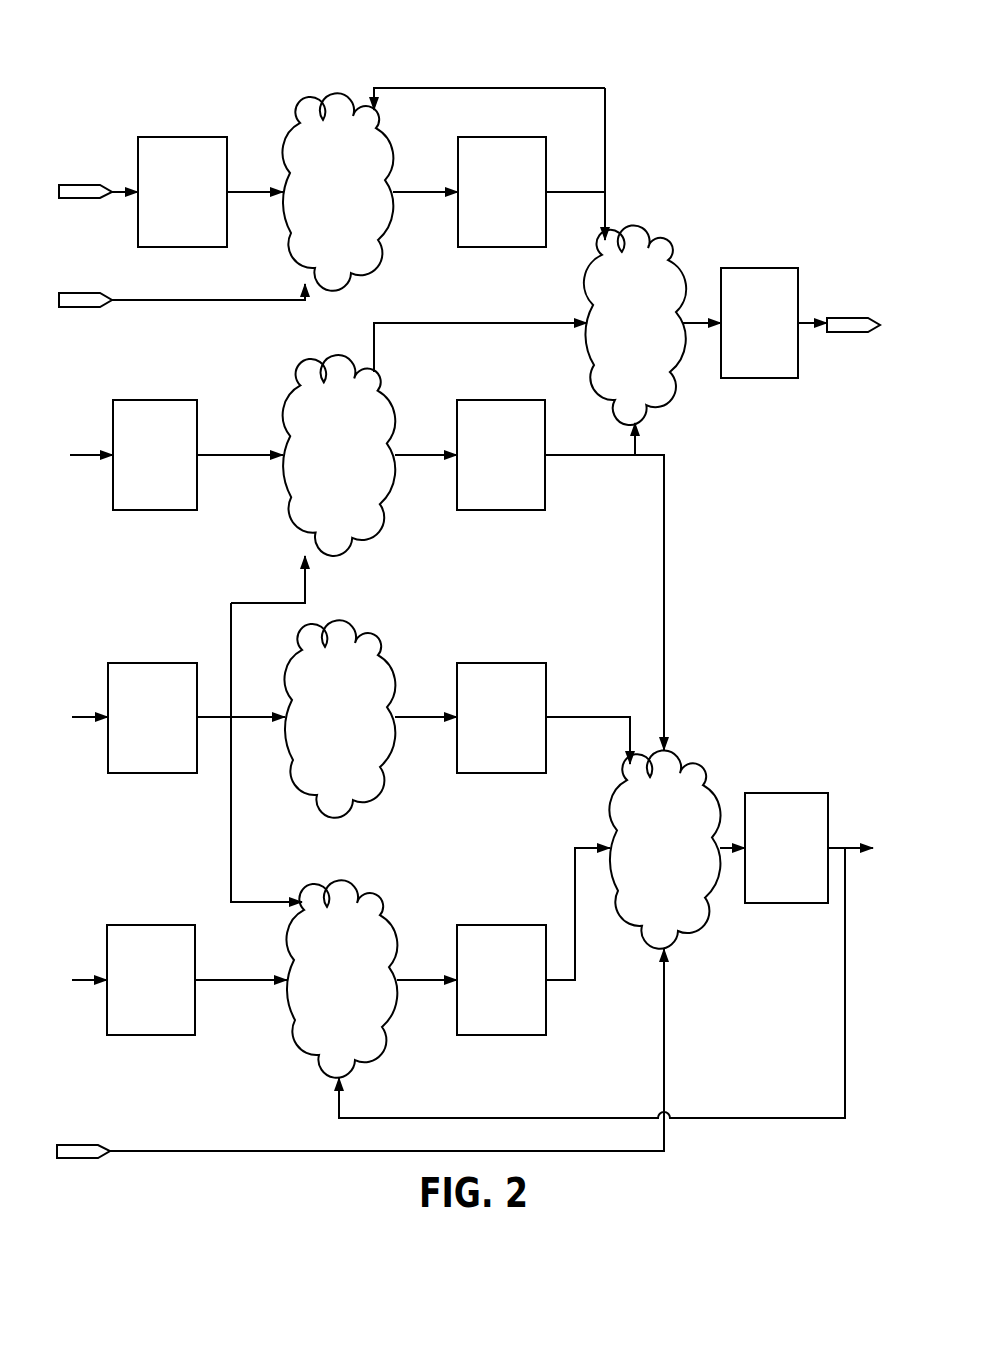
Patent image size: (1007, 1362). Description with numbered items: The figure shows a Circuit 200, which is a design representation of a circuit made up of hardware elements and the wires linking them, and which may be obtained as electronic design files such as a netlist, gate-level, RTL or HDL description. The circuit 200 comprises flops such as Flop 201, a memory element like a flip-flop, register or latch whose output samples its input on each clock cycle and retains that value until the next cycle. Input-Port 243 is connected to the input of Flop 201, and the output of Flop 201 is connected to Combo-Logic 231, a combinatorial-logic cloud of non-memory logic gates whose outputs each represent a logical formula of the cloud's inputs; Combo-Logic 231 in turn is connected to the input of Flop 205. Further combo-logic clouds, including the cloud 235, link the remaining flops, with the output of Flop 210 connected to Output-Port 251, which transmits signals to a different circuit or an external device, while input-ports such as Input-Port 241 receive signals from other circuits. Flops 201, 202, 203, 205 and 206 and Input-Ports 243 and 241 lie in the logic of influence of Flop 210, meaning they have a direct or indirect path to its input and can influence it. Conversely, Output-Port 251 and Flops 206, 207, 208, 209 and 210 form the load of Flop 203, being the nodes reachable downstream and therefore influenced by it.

The circuit 200 is at (765, 107).
The flop 201 is at (183, 137).
The flop 202 is at (152, 400).
The flop 203 is at (152, 663).
The flop 205 is at (500, 247).
The flop 206 is at (500, 400).
The flop 207 is at (500, 663).
The flop 208 is at (500, 925).
The flop 209 is at (785, 793).
The flop 210 is at (785, 268).
The combo-logic 231 is at (338, 93).
The data cloud 235 is at (662, 400).
The input-port 241 is at (85, 307).
The input-port 243 is at (85, 198).
The output-port 251 is at (845, 332).